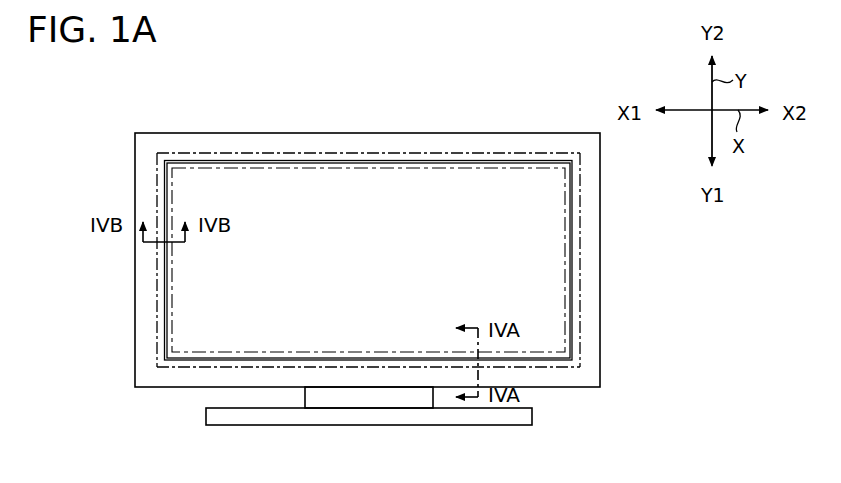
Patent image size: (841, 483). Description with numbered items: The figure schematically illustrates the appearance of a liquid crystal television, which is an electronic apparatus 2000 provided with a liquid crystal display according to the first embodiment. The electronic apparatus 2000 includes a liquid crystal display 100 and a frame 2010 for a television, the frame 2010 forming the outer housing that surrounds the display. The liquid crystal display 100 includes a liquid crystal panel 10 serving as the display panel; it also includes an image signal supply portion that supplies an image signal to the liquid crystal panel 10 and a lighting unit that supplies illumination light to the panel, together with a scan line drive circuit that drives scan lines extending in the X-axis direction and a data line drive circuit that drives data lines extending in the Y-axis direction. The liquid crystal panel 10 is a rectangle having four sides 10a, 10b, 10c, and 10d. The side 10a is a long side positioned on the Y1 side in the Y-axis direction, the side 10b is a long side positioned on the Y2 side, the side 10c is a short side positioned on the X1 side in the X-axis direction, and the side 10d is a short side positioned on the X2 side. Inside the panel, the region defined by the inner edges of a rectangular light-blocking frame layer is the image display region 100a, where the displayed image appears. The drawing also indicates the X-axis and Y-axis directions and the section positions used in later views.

The electronic apparatus 2000 is at (230, 63).
The frame 2010 is at (592, 328).
The liquid crystal panel 10 is at (586, 232).
The side 10a is at (378, 367).
The side 10b is at (398, 152).
The side 10c is at (156, 254).
The side 10d is at (583, 270).
The liquid crystal display 100 is at (468, 145).
The image display region 100a is at (316, 187).